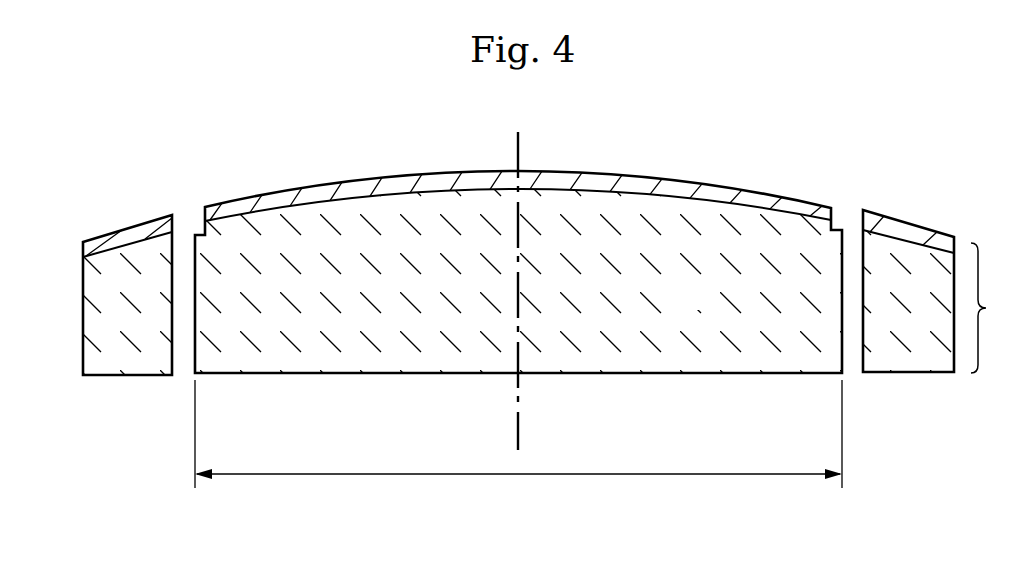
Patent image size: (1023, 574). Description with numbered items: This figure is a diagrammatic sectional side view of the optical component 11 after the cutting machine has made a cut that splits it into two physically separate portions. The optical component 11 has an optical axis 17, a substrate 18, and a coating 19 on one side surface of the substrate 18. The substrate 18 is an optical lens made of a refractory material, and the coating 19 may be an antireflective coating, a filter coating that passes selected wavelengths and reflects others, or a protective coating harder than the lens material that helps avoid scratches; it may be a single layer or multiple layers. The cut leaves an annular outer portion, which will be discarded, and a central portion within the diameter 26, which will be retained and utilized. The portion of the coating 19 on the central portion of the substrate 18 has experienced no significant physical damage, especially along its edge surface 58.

The substrate 18 is at (694, 306).
The edge surface 58 is at (833, 207).
The coating 19 is at (888, 226).
The optical component 11 is at (996, 308).
The optical axis 17 is at (520, 424).
The diameter 26 is at (637, 474).